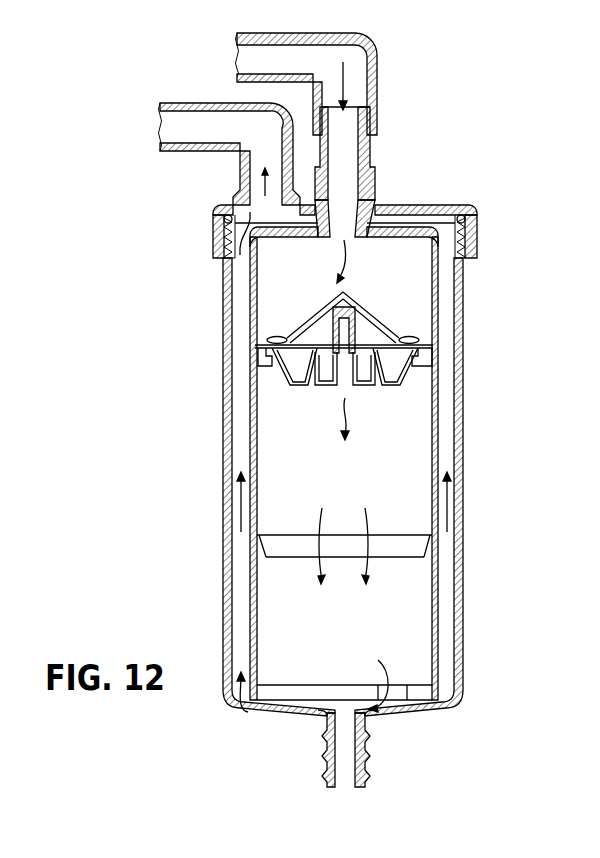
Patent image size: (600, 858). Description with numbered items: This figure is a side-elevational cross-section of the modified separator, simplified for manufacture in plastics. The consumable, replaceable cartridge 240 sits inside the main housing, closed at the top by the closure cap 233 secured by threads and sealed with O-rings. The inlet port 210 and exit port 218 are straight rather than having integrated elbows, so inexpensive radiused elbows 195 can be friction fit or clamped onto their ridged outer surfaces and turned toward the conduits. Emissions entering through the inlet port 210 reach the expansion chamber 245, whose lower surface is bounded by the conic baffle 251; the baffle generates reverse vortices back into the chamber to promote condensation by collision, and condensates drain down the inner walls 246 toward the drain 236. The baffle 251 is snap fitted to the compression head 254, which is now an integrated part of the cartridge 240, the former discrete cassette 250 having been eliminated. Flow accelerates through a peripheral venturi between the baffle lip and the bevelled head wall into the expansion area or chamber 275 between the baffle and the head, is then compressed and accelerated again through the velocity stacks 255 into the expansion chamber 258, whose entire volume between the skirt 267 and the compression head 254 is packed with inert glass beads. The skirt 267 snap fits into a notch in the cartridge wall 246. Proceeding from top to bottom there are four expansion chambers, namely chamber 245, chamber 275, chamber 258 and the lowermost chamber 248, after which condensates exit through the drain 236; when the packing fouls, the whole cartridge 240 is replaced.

The radiused elbows 195 is at (230, 102).
The exit port 218 is at (245, 172).
The inlet port 210 is at (345, 157).
The closure cap 233 is at (413, 205).
The cartridge 240 is at (437, 447).
The inner walls 246 is at (258, 318).
The expansion chamber 245 is at (415, 286).
The conic baffle 251 is at (317, 325).
The expansion area or chamber 275 is at (308, 336).
The cassette 250 is at (425, 352).
The velocity stacks 255 is at (275, 353).
The compression head 254 is at (290, 367).
The expansion chamber 258 is at (415, 454).
The skirt 267 is at (260, 540).
The expansion chamber 248 is at (370, 627).
The drain 236 is at (360, 762).